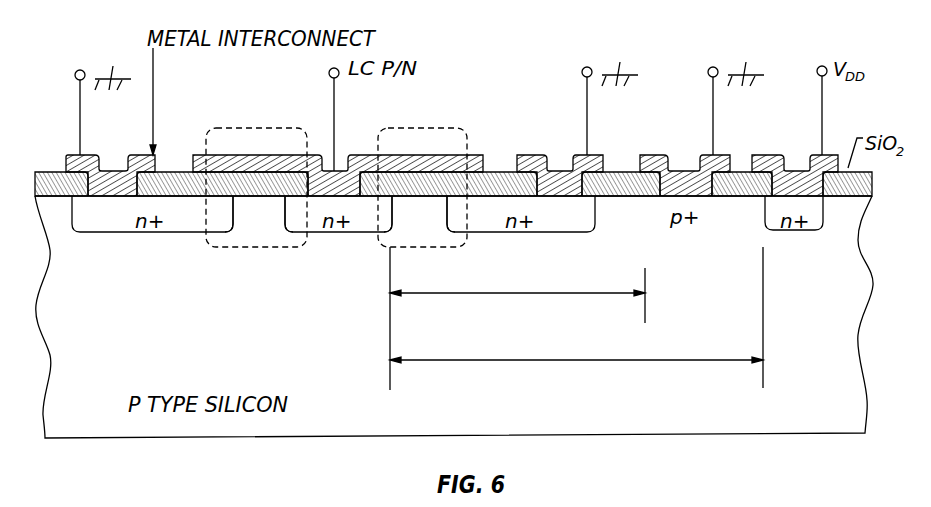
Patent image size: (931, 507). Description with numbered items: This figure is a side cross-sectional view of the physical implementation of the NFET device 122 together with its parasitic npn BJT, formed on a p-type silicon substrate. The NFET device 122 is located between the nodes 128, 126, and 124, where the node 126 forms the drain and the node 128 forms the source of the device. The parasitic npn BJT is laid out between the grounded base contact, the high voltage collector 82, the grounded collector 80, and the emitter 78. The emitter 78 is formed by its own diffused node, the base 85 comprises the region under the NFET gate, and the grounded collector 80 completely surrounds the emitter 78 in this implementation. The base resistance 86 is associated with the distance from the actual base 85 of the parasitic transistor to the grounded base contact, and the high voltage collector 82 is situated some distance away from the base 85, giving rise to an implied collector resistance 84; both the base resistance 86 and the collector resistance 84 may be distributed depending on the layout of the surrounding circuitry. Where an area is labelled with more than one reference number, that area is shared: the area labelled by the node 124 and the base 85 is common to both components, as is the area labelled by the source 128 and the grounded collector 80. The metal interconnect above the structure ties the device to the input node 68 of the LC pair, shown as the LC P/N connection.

The input node 68 is at (363, 119).
The emitter 78 is at (338, 234).
The grounded collector 80 is at (341, 234).
The high voltage collector 82 is at (807, 231).
The collector resistance 84 is at (576, 317).
The base 85 is at (346, 239).
The base resistance 86 is at (517, 318).
The NFET device 122 is at (358, 166).
The node 124 is at (338, 162).
The drain 126 is at (313, 255).
The source 128 is at (339, 229).